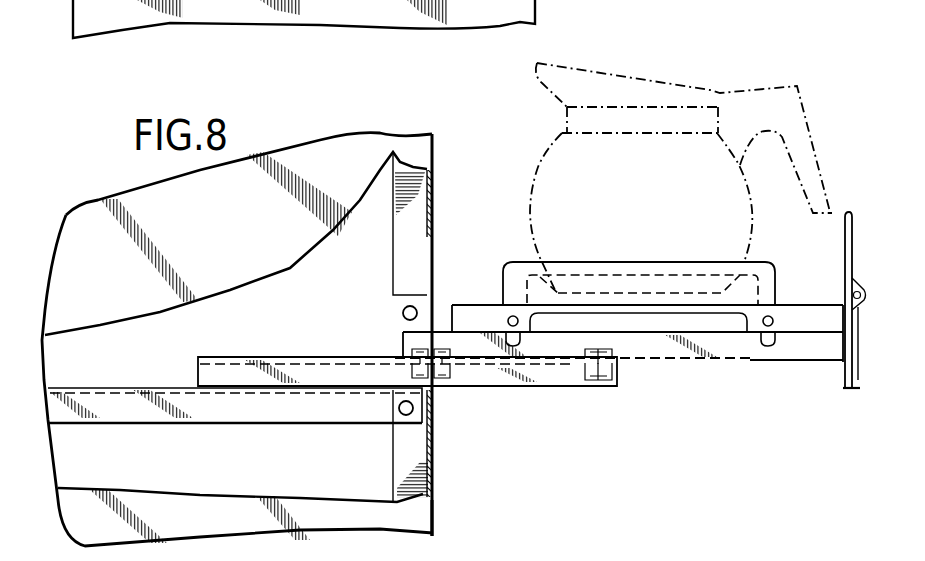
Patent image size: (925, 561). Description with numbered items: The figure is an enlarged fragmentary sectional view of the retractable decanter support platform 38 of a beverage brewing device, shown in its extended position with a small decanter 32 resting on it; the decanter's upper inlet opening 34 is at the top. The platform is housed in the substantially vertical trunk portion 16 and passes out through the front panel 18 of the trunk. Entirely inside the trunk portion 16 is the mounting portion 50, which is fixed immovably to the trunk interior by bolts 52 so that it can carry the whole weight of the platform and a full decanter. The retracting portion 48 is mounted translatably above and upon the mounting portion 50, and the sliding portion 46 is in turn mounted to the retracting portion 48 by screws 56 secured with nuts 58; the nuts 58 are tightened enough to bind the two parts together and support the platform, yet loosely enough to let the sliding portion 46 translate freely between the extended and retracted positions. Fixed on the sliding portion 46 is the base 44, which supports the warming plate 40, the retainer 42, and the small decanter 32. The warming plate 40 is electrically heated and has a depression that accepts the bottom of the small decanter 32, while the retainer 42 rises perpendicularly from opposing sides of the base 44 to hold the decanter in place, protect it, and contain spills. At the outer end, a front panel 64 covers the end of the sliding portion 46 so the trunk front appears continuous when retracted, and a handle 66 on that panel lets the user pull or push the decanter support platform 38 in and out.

The trunk portion 16 is at (66, 215).
The front panel 18 is at (437, 507).
The small decanter 32 is at (532, 193).
The upper inlet opening 34 is at (632, 78).
The decanter support platform 38 is at (700, 375).
The warming plate 40 is at (768, 262).
The retainer 42 is at (510, 262).
The base 44 is at (470, 305).
The sliding portion 46 is at (750, 362).
The retracting portion 48 is at (285, 357).
The mounting portion 50 is at (220, 390).
The bolts 52 is at (402, 312).
The screws 56 is at (472, 362).
The nuts 58 is at (450, 372).
The front panel 64 is at (852, 217).
The handle 66 is at (852, 390).